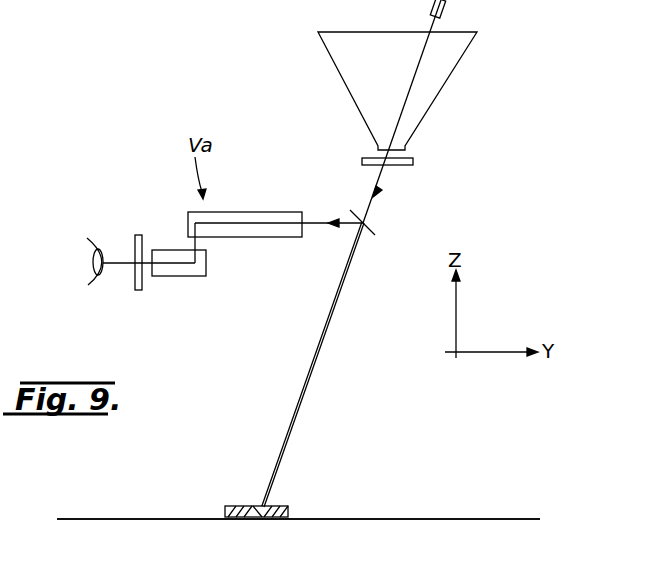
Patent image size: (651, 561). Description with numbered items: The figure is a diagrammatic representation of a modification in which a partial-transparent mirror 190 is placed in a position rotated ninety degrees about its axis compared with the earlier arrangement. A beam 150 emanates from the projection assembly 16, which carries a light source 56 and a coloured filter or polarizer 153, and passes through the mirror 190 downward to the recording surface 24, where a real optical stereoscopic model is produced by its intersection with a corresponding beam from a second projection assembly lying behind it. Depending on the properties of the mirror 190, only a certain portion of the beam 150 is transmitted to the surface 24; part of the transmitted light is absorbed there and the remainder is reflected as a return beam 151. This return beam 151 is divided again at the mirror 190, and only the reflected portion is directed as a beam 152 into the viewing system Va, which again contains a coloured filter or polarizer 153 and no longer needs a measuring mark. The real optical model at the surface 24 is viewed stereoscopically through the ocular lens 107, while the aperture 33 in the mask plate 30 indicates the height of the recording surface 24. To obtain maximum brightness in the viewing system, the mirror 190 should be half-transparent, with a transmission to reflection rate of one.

The projection assembly 16 is at (442, 75).
The light source 56 is at (452, 8).
The coloured filters or polarizers 153 is at (413, 162).
The beam 150 is at (377, 197).
The return beam 151 is at (310, 362).
The beam 152 is at (326, 221).
The partial-transparent mirror 190 is at (377, 232).
The ocular lens 107 is at (101, 271).
The mask plate 30 is at (288, 506).
The aperture 33 is at (272, 519).
The recording surface 24 is at (365, 519).